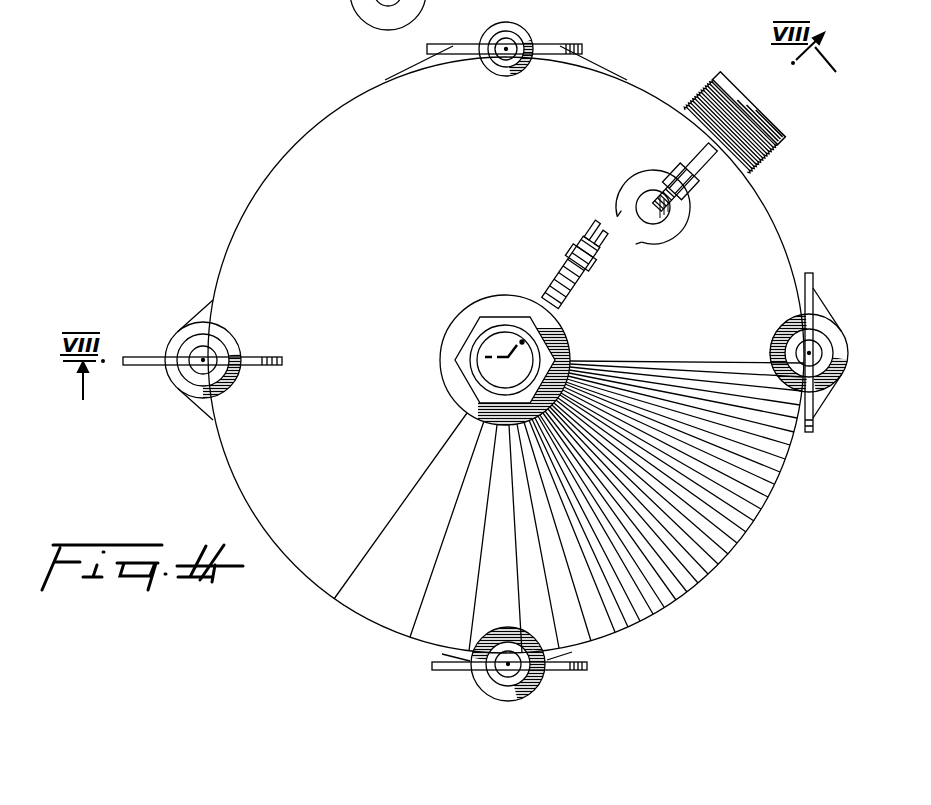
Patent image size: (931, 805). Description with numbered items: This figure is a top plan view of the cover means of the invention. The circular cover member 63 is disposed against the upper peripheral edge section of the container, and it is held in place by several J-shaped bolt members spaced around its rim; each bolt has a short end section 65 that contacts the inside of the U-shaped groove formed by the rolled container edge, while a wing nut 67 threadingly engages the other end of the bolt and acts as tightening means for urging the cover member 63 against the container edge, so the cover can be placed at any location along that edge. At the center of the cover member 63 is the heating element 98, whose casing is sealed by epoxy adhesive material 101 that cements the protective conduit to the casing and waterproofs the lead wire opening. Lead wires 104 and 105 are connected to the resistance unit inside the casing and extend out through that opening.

The cover member 63 is at (302, 198).
The short end section 65 is at (202, 368).
The wing nut 67 is at (467, 350).
The heating element 98 is at (463, 377).
The epoxy adhesive material 101 is at (475, 320).
The lead wire 104 is at (590, 250).
The lead wire 105 is at (610, 235).